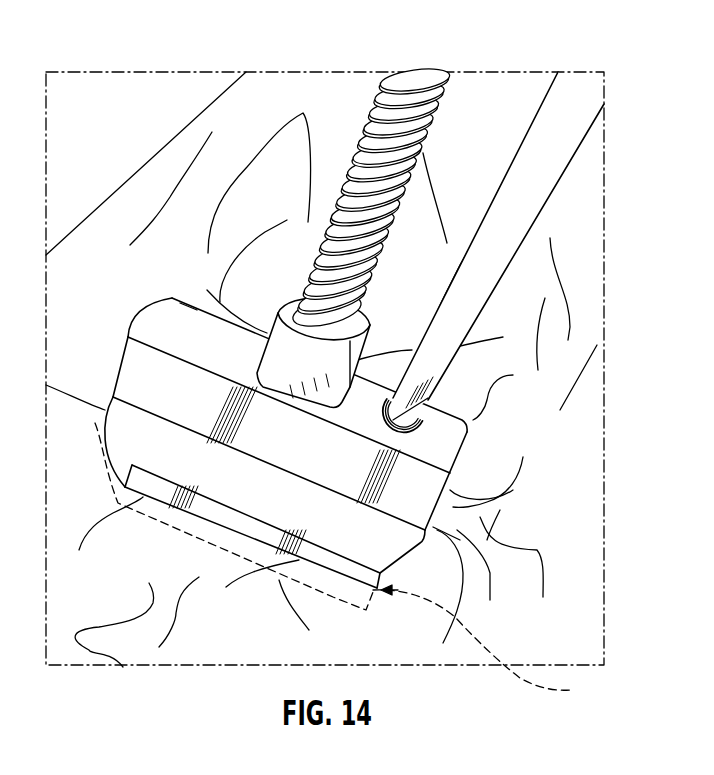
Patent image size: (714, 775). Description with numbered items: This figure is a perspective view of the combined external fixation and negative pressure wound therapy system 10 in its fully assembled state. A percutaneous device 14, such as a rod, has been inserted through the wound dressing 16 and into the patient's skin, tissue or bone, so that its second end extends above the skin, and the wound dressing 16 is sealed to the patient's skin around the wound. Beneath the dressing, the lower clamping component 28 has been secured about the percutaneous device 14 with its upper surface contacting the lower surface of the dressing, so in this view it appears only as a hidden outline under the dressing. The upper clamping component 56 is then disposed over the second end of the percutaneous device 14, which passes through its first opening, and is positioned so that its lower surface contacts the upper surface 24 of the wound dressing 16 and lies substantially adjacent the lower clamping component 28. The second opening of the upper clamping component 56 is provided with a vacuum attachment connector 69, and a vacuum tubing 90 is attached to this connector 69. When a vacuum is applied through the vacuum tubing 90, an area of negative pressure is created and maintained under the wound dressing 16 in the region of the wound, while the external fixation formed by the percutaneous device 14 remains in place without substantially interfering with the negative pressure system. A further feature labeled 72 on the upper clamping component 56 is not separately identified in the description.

The combined external fixation and negative pressure wound therapy system 10 is at (590, 62).
The percutaneous device 14 is at (406, 90).
The wound dressing 16 is at (326, 98).
The upper surface of the wound dressing 24 is at (420, 643).
The lower clamping component 28 is at (347, 564).
The upper clamping component 56 is at (455, 507).
The vacuum attachment connector 69 is at (468, 446).
The top face 72 is at (232, 322).
The vacuum tubing 90 is at (550, 167).